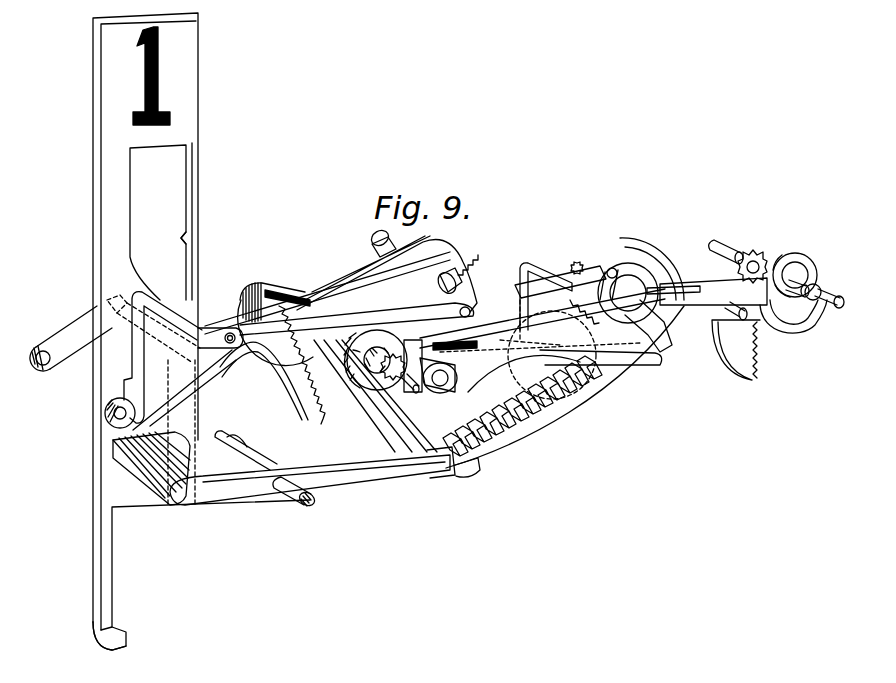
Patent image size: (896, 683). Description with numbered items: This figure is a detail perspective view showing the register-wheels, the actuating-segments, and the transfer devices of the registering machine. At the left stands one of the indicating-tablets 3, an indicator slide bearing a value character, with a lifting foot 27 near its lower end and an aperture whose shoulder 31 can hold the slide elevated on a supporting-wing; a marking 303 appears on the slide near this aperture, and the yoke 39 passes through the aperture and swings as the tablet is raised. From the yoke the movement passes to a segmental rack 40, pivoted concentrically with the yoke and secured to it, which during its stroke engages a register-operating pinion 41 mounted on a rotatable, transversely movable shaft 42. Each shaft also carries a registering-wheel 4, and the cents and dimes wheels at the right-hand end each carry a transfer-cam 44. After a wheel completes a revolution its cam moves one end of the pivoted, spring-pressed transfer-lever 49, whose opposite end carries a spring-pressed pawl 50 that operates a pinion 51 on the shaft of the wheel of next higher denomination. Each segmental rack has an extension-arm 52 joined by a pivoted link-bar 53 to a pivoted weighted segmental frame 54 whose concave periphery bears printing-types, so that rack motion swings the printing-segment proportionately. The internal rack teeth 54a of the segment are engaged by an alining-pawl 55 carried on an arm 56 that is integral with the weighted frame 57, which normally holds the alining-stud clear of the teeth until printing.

The indicating-tablet 3 is at (201, 331).
The plate slot 303 is at (143, 147).
The shoulder 31 is at (189, 238).
The foot 27 is at (122, 634).
The yoke 39 is at (78, 321).
The extension-arm 52 is at (198, 330).
The register-operating pinion 41 is at (307, 300).
The link-bar 53 is at (372, 272).
The spring-pressed pawl 50 is at (438, 302).
The segmental rack 40 is at (290, 385).
The weighted segmental frame 54 is at (393, 423).
The internal rack teeth 54a is at (563, 387).
The registering-wheel 4 is at (365, 374).
The transfer-lever 49 is at (505, 358).
The alining-pawl 55 is at (438, 428).
The arm 56 is at (372, 472).
The weighted frame 57 is at (180, 432).
The pinion 51 is at (360, 414).
The shaft 42 is at (410, 386).
The transfer-cam 44 is at (660, 284).